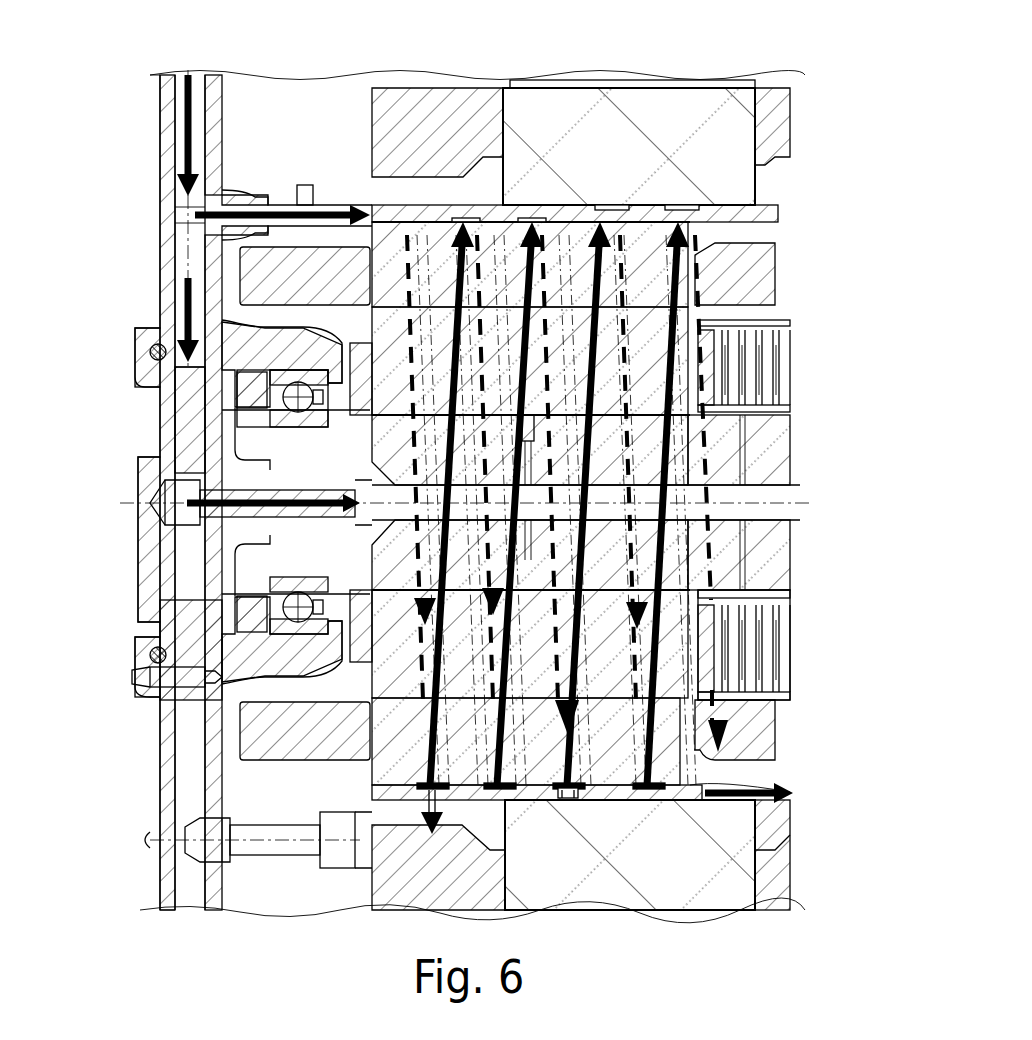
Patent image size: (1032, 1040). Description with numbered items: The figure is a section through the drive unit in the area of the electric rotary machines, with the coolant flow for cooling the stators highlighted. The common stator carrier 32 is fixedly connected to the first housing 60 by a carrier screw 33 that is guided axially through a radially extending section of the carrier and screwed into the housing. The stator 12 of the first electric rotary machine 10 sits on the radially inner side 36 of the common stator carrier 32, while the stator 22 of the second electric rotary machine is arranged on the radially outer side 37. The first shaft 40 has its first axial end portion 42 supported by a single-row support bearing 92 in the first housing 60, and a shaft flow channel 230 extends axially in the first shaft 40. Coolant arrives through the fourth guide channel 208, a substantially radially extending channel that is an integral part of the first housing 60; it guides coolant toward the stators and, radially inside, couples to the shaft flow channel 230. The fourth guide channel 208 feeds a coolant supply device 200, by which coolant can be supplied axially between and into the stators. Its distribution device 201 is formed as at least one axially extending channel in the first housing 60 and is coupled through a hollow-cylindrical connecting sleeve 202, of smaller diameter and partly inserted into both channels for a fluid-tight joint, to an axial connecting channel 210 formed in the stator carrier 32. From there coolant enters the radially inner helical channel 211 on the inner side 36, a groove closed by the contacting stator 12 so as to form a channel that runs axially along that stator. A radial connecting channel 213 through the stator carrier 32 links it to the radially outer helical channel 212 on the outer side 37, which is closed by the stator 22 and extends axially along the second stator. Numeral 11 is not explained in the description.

The coolant supply device 200 is at (138, 170).
The fourth guide channel 208 is at (162, 105).
The distribution device 201 is at (200, 233).
The connecting sleeve 202 is at (297, 207).
The axial connecting channel 210 is at (374, 208).
The radially inner helical channel 211 is at (540, 215).
The radially outer helical channel 212 is at (690, 215).
The radially outer side 37 is at (757, 193).
The common stator carrier 32 is at (762, 212).
The radially inner side 36 is at (745, 228).
The shaft flow channel 230 is at (767, 493).
The first shaft 40 is at (317, 453).
The first axial end portion 42 is at (317, 453).
The support bearing 92 is at (245, 593).
The first electric rotary machine 10 is at (703, 692).
The disc 11 is at (703, 692).
The stator of the first electric rotary machine 12 is at (717, 738).
The first housing 60 is at (182, 750).
The radial connecting channel 213 is at (700, 822).
The stator of the second electric rotary machine 22 is at (730, 870).
The carrier screw 33 is at (240, 845).